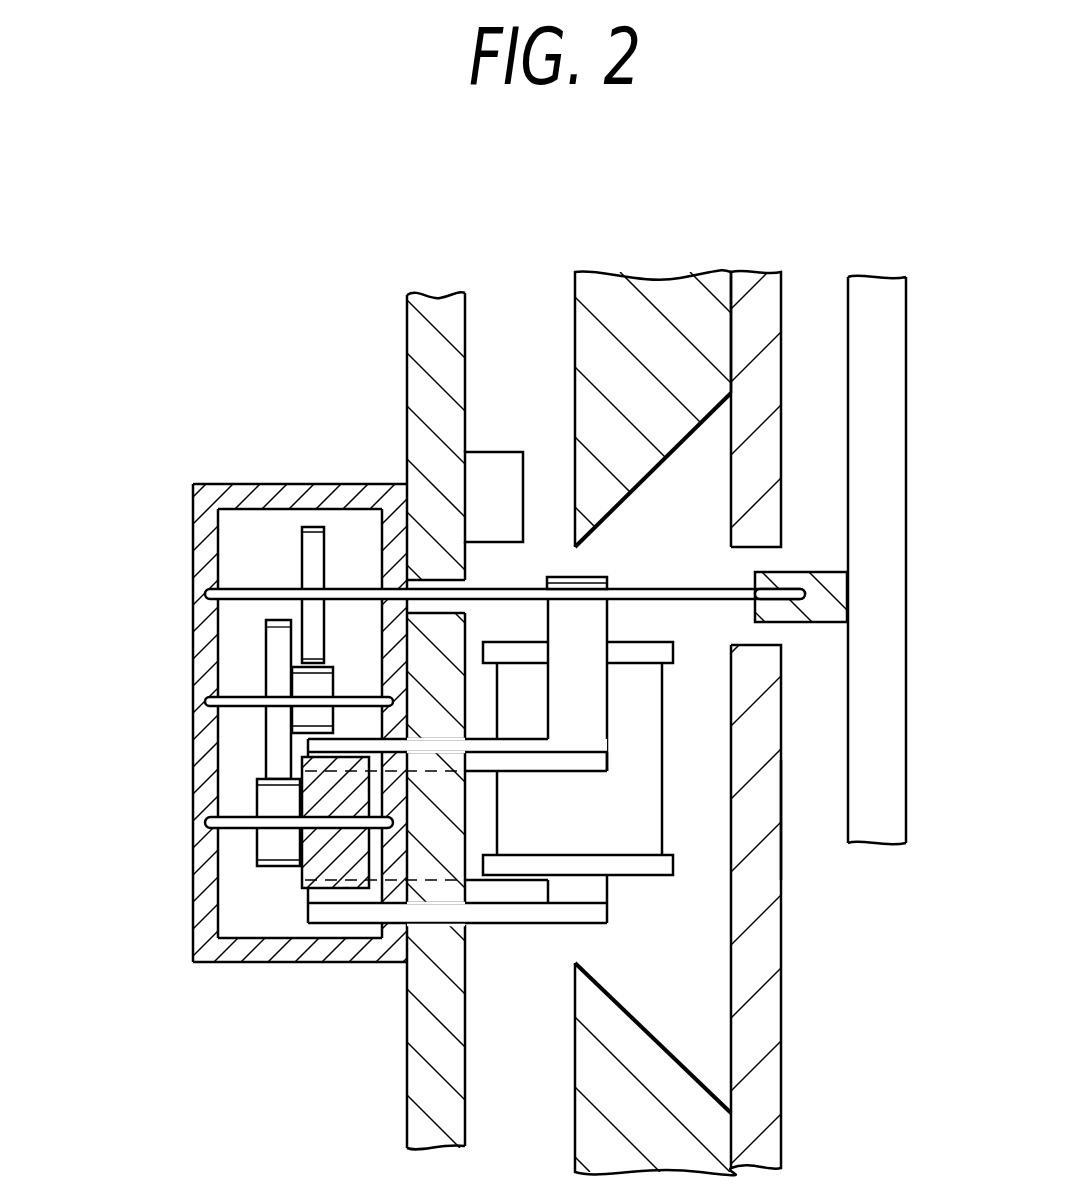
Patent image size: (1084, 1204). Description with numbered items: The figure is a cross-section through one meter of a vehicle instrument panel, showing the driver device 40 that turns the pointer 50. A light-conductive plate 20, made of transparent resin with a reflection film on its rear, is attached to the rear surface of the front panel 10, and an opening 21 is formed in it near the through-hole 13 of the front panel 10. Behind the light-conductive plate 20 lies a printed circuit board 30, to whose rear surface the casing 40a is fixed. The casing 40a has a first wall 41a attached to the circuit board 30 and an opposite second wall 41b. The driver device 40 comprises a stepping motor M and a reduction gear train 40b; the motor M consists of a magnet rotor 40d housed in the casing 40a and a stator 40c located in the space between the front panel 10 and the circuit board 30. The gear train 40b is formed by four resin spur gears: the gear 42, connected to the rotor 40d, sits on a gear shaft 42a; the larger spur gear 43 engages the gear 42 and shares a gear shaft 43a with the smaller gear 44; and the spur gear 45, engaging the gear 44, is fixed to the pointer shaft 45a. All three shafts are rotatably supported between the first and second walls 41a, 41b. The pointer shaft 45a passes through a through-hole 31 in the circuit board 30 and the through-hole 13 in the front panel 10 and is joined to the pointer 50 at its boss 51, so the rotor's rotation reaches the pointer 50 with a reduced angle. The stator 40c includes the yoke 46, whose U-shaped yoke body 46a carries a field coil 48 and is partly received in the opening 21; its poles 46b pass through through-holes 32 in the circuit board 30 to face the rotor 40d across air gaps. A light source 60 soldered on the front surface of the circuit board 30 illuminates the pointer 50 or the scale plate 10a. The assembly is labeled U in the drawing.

The front panel 10 is at (793, 283).
The scale plate 10a is at (780, 818).
The through-hole 13 is at (760, 637).
The light-conductive plate 20 is at (688, 268).
The opening 21 is at (665, 1047).
The printed circuit board 30 is at (400, 343).
The through-hole 31 is at (448, 612).
The through-holes 32 is at (445, 750).
The driver device 40 is at (186, 460).
The casing 40a is at (297, 963).
The reduction gear train 40b is at (250, 555).
The stator 40c is at (530, 938).
The rotor 40d is at (305, 873).
The first wall 41a is at (393, 538).
The second wall 41b is at (207, 770).
The gear 42 is at (267, 845).
The gear shaft 42a is at (237, 818).
The spur gear 43 is at (300, 722).
The gear shaft 43a is at (240, 697).
The gear 44 is at (300, 686).
The spur gear 45 is at (302, 573).
The pointer shaft 45a is at (247, 600).
The yoke 46 is at (597, 568).
The yoke body 46a is at (585, 625).
The poles 46b is at (308, 742).
The field coil 48 is at (640, 795).
The pointer 50 is at (910, 718).
The boss 51 is at (827, 572).
The light source 60 is at (490, 452).
The stepping motor M is at (600, 933).
The drive unit U is at (602, 232).